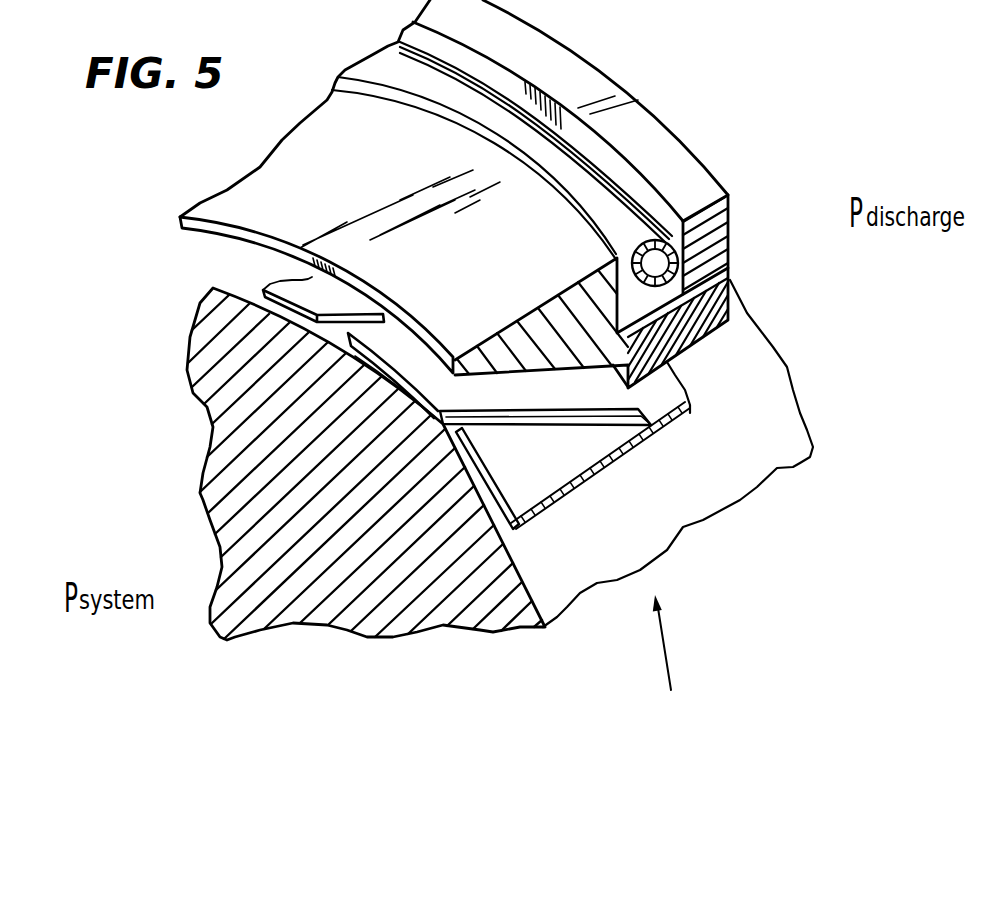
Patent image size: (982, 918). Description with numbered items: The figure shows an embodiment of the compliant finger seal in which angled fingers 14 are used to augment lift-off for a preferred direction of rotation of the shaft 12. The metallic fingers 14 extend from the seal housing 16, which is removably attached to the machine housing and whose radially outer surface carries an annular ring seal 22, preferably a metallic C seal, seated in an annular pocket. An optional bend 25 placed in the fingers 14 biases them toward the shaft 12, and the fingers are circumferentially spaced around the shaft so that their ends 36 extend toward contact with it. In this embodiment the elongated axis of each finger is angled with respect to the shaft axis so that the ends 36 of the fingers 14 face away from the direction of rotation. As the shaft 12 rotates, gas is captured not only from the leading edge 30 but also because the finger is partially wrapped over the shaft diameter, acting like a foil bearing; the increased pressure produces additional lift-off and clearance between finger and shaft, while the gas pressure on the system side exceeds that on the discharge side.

The shaft 12 is at (386, 626).
The fingers 14 is at (377, 343).
The seal housing 16 is at (500, 330).
The annular ring seal 22 is at (645, 238).
The bend 25 is at (633, 460).
The leading edge 30 is at (443, 440).
The ends 36 is at (406, 392).